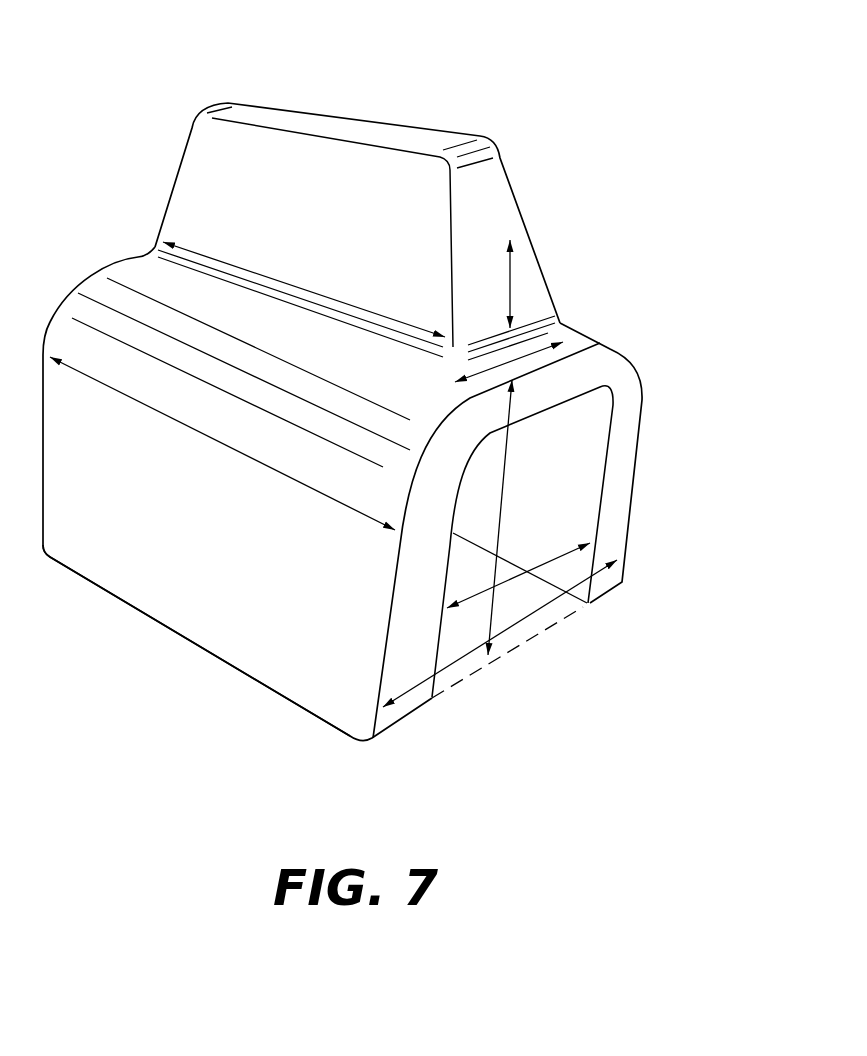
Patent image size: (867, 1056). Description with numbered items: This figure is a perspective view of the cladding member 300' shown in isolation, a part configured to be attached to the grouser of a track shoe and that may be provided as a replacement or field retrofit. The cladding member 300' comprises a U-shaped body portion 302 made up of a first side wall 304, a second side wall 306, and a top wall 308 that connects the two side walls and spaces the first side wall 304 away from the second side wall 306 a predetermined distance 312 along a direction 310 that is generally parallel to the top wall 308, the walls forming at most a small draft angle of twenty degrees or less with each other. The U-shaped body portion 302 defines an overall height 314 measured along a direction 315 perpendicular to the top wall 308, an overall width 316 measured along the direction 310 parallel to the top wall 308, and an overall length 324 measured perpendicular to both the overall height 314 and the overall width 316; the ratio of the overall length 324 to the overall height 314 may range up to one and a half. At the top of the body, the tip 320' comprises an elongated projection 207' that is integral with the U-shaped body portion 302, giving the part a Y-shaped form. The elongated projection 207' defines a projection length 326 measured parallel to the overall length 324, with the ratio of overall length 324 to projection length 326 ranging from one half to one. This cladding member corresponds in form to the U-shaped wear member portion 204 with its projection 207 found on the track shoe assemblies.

The U-shaped wear member portion 204 is at (355, 645).
The projection 207 is at (420, 114).
The elongated projection 207' is at (330, 192).
The cladding member 300' is at (317, 398).
The U-shaped body portion 302 is at (612, 508).
The first side wall 304 is at (280, 640).
The second side wall 306 is at (640, 453).
The top wall 308 is at (573, 387).
The direction parallel to the top wall 310 is at (527, 356).
The predetermined distance 312 is at (497, 587).
The overall height 314 is at (508, 417).
The direction perpendicular to the top wall 315 is at (512, 273).
The overall width 316 is at (418, 682).
The tip 320' is at (357, 177).
The overall length 324 is at (167, 417).
The projection length 326 is at (215, 245).